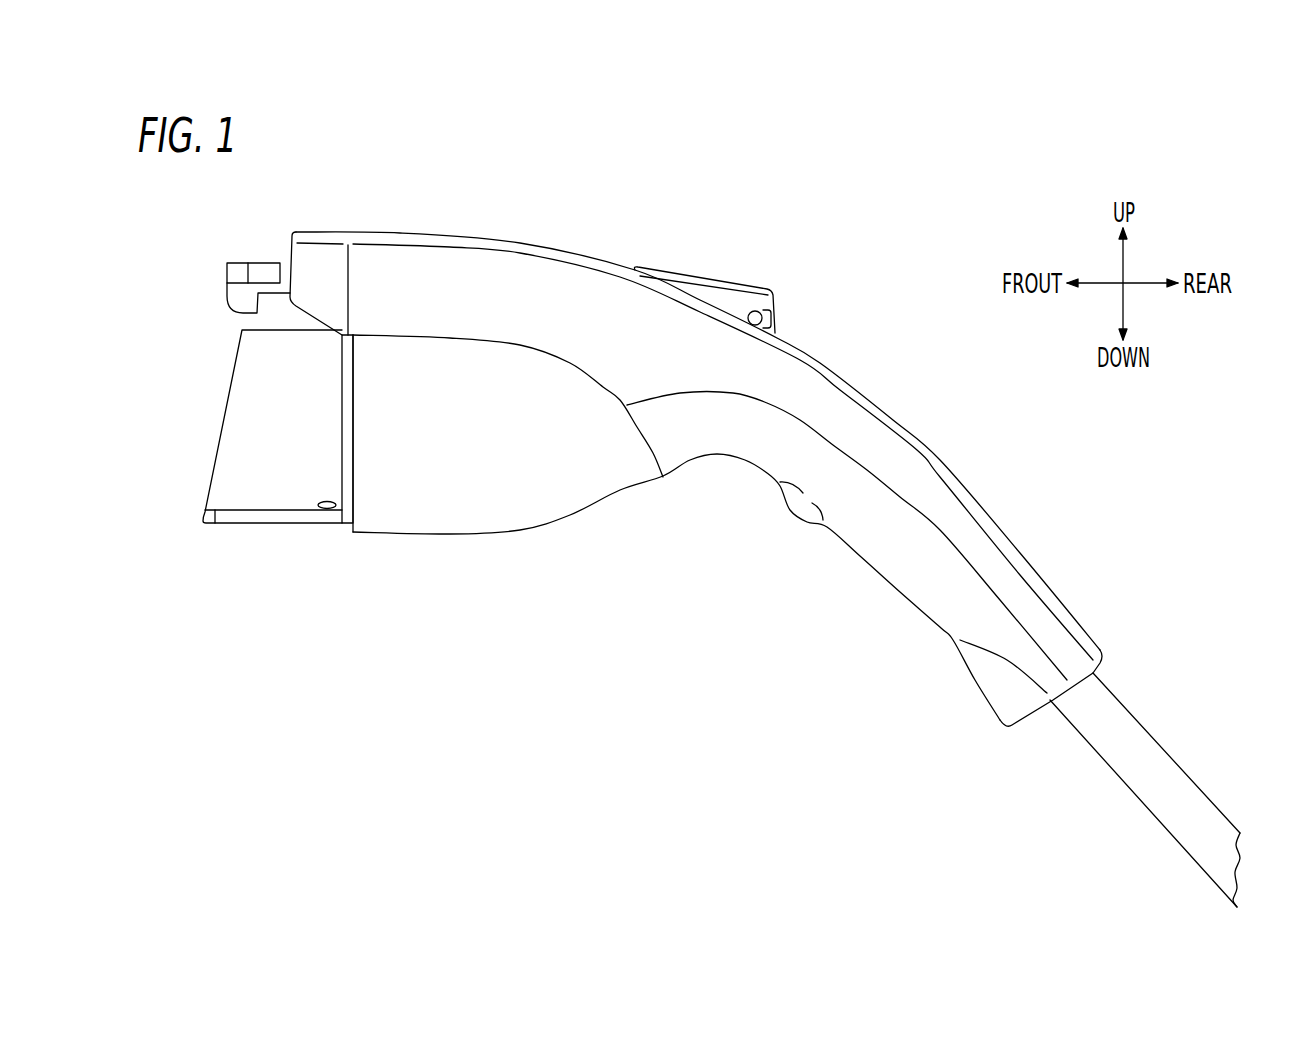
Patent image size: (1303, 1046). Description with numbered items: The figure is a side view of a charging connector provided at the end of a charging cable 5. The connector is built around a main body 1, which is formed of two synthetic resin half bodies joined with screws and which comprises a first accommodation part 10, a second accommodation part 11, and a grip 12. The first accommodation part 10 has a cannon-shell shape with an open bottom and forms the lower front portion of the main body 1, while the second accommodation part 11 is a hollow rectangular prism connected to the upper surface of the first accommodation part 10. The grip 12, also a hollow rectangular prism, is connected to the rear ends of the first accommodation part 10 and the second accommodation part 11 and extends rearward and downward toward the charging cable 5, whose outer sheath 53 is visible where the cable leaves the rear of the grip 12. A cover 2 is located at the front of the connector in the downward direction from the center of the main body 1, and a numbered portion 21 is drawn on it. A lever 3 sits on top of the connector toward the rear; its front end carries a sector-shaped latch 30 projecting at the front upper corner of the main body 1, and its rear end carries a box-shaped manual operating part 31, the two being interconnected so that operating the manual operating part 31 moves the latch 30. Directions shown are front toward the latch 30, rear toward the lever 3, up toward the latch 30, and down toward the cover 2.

The main body 1 is at (545, 247).
The cover 2 is at (263, 525).
The lever 3 is at (675, 267).
The charging cable 5 is at (1143, 723).
The first accommodation part 10 is at (510, 495).
The second accommodation part 11 is at (420, 270).
The grip 12 is at (865, 432).
The connector body 21 is at (257, 422).
The latch 30 is at (243, 298).
The manual operating part 31 is at (730, 300).
The sheath 53 is at (1158, 782).